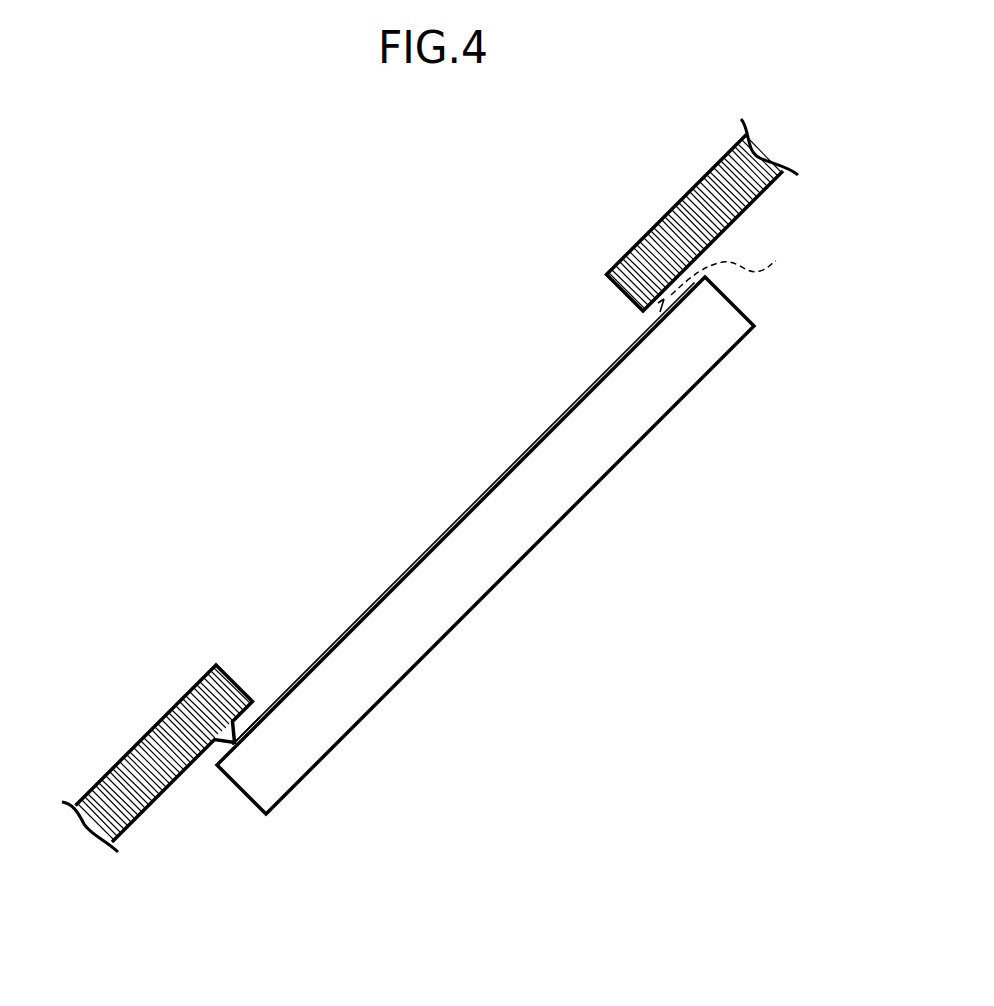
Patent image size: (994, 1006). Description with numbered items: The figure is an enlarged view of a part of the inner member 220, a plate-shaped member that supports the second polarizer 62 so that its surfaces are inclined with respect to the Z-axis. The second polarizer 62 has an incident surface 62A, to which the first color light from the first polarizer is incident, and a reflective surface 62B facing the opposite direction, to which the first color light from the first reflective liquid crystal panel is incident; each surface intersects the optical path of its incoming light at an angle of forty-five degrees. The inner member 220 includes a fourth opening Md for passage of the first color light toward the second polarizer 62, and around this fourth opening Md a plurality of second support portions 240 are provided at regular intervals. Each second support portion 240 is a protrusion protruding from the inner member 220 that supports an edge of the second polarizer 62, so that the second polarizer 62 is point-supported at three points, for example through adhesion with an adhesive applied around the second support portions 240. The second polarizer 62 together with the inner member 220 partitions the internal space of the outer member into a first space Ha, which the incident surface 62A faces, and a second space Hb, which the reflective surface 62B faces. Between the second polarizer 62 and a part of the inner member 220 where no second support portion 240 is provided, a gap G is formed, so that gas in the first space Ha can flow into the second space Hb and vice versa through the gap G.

The inner member 220 is at (155, 768).
The second support portion 240 is at (248, 738).
The second polarizer 62 is at (485, 545).
The incident surface 62A is at (507, 575).
The reflective surface 62B is at (462, 515).
The gap G is at (660, 312).
The fourth opening Md is at (233, 686).
The second space Hb is at (325, 372).
The first space Ha is at (712, 718).